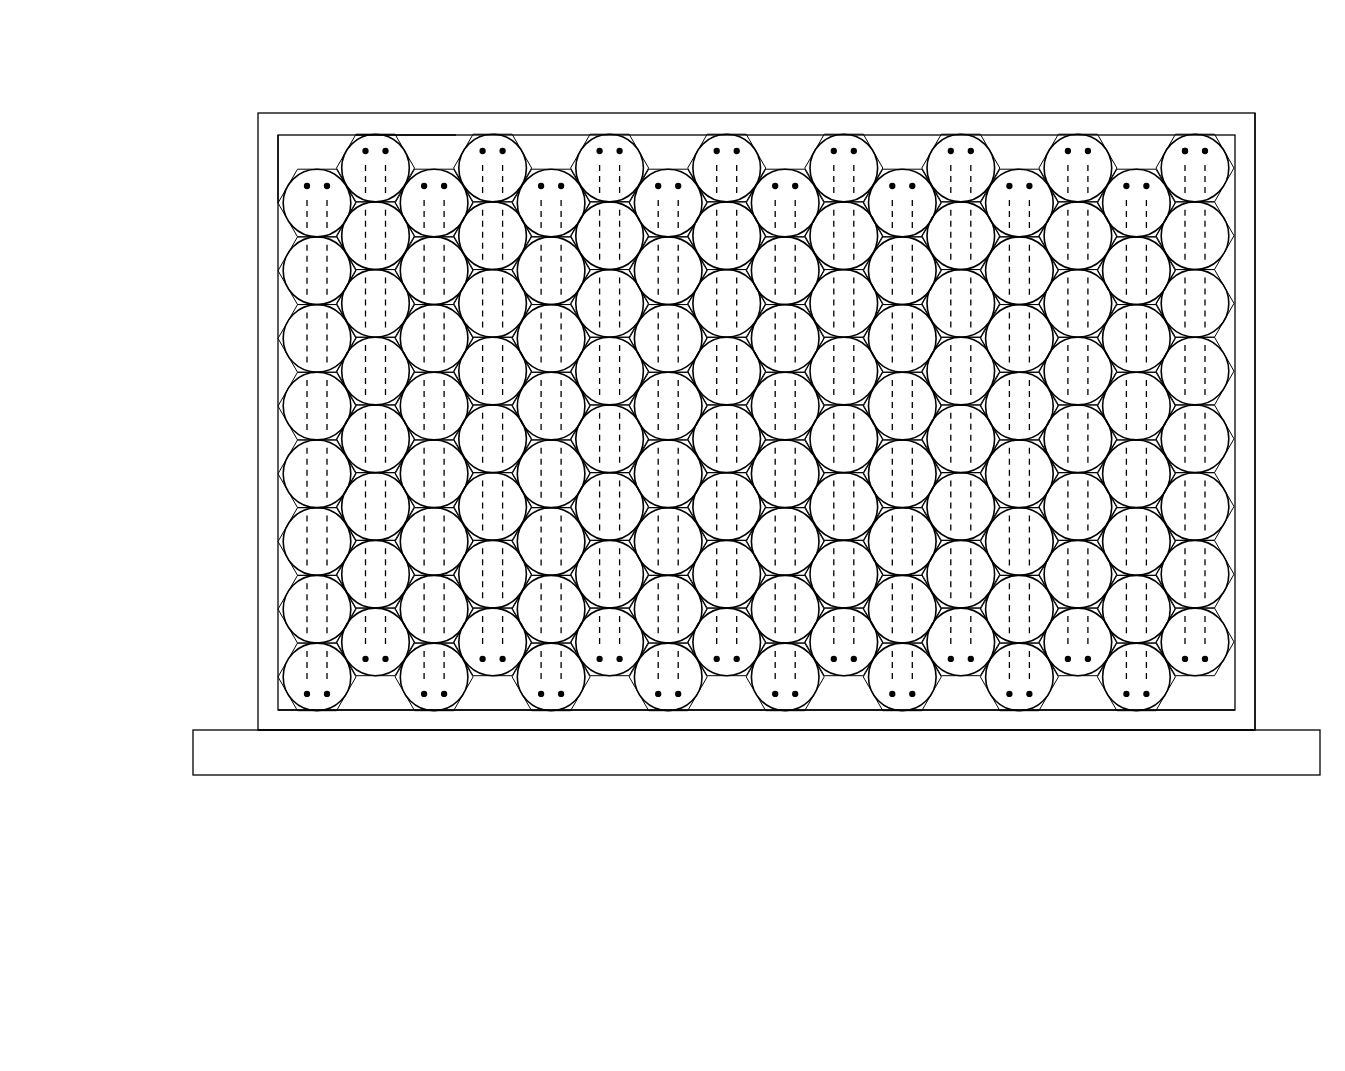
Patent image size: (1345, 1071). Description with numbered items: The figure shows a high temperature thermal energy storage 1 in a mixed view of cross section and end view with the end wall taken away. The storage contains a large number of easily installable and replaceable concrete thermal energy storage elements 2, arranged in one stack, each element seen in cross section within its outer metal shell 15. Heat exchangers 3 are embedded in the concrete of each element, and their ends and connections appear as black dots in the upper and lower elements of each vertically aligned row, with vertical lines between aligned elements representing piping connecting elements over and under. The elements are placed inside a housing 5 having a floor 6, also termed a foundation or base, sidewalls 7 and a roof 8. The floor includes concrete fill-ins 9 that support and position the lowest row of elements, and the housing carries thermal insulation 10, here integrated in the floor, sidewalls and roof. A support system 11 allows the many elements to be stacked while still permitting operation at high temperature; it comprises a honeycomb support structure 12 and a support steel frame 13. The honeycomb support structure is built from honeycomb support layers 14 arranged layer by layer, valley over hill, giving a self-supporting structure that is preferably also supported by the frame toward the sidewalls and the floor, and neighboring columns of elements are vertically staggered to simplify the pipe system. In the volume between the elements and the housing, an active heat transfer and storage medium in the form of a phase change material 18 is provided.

The high temperature thermal energy storage 1 is at (751, 477).
The concrete thermal energy storage element 2 is at (1079, 136).
The heat exchanger 3 is at (1185, 148).
The housing 5 is at (789, 464).
The floor 6 is at (474, 722).
The sidewalls 7 is at (1247, 558).
The roof 8 is at (576, 128).
The concrete fill-ins 9 is at (846, 698).
The thermal insulation 10 is at (1133, 765).
The support system 11 is at (707, 391).
The honeycomb support structure 12 is at (268, 203).
The support steel frame 13 is at (278, 165).
The honeycomb support layers 14 is at (268, 339).
The outer metal shell 15 is at (820, 148).
The phase change material 18 is at (425, 145).